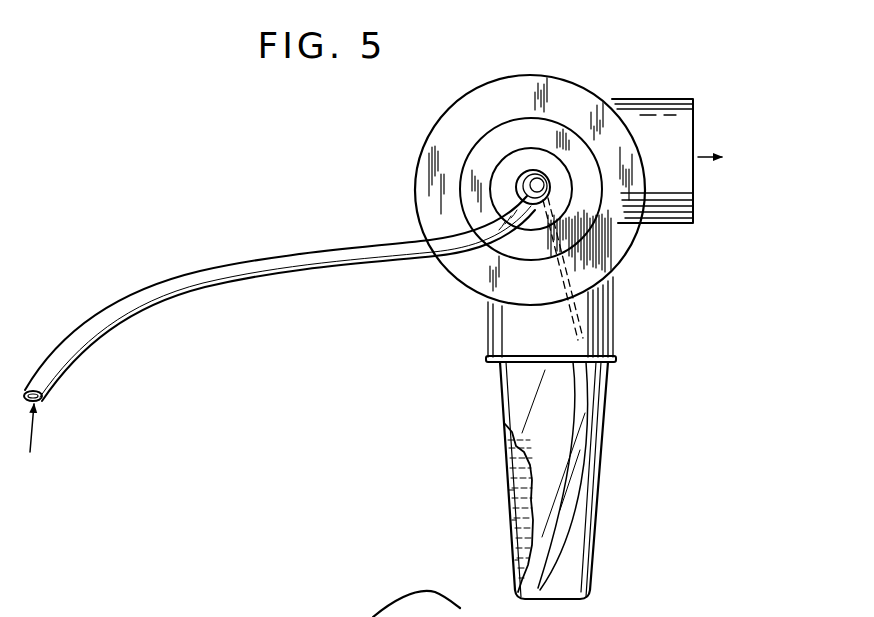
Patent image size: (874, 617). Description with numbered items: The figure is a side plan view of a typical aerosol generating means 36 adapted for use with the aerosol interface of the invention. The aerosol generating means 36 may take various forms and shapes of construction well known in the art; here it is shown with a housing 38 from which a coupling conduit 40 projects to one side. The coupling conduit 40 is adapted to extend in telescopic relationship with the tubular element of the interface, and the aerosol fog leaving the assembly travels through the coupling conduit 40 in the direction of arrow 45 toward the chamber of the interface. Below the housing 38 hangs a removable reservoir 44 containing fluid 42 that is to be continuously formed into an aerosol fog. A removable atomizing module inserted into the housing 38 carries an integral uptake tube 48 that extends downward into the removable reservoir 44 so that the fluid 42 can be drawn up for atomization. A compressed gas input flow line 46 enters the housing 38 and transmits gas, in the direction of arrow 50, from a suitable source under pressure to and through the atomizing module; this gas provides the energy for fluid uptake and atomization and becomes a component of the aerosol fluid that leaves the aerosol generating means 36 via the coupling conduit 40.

The aerosol generating means 36 is at (596, 80).
The housing 38 is at (463, 286).
The coupling conduit 40 is at (693, 118).
The fluid 42 is at (520, 514).
The removable reservoir 44 is at (600, 490).
The arrow 45 is at (706, 158).
The compressed gas input flow line 46 is at (298, 260).
The uptake tube 48 is at (588, 401).
The arrow 50 is at (33, 430).